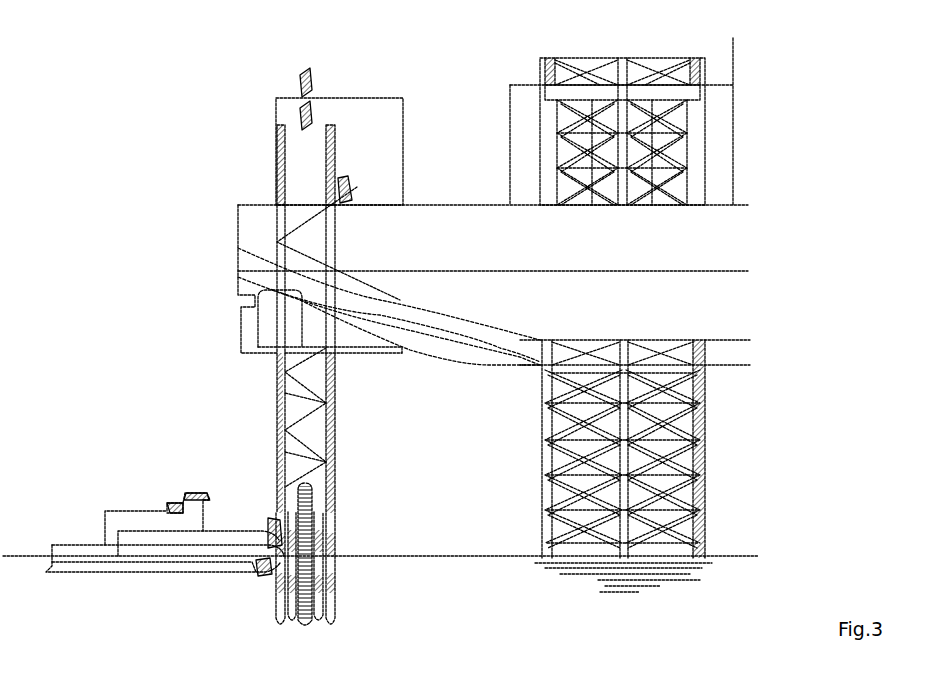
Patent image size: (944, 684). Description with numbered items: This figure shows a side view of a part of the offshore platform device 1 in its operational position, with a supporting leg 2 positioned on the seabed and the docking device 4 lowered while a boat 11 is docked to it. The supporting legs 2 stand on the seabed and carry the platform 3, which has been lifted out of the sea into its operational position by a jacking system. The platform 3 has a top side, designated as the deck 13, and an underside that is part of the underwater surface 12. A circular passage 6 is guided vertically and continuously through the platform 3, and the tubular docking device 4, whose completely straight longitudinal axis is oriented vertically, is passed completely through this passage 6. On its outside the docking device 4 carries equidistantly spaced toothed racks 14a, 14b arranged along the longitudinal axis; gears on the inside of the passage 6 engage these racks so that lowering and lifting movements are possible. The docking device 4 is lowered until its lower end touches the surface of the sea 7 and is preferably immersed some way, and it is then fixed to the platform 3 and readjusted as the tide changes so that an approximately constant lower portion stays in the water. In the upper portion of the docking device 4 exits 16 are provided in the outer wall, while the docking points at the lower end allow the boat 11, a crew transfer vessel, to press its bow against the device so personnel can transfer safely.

The offshore platform device 1 is at (133, 130).
The supporting legs 2 is at (703, 491).
The platform 3 is at (737, 215).
The docking device 4 is at (310, 140).
The passage 6 is at (325, 233).
The surface of the sea 7 is at (473, 558).
The boat 11 is at (137, 520).
The underwater surface 12 is at (409, 352).
The deck 13 is at (474, 205).
The toothed rack 14a is at (275, 177).
The toothed rack 14b is at (336, 147).
The exits 16 is at (346, 183).